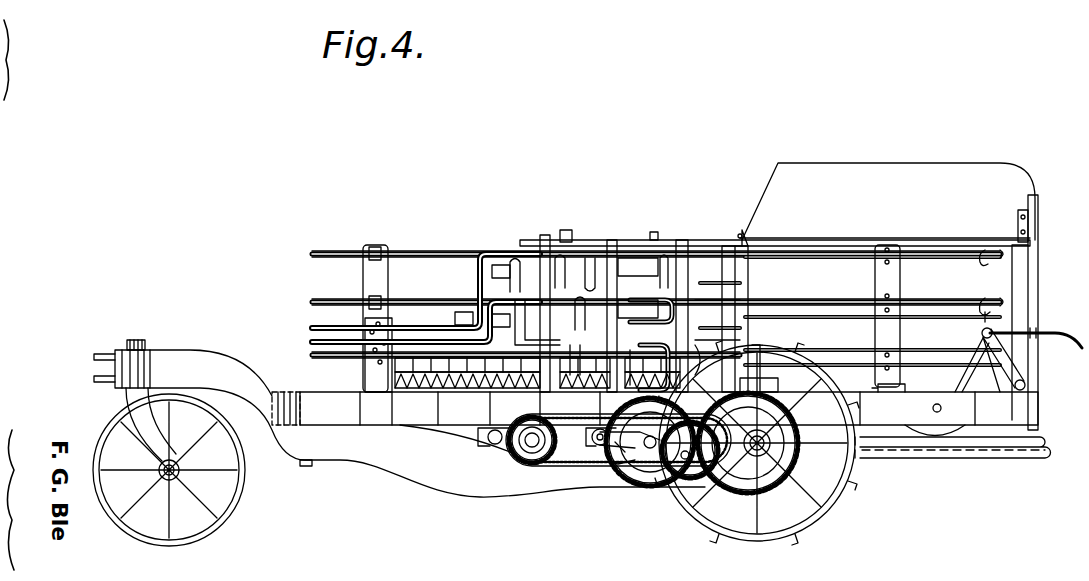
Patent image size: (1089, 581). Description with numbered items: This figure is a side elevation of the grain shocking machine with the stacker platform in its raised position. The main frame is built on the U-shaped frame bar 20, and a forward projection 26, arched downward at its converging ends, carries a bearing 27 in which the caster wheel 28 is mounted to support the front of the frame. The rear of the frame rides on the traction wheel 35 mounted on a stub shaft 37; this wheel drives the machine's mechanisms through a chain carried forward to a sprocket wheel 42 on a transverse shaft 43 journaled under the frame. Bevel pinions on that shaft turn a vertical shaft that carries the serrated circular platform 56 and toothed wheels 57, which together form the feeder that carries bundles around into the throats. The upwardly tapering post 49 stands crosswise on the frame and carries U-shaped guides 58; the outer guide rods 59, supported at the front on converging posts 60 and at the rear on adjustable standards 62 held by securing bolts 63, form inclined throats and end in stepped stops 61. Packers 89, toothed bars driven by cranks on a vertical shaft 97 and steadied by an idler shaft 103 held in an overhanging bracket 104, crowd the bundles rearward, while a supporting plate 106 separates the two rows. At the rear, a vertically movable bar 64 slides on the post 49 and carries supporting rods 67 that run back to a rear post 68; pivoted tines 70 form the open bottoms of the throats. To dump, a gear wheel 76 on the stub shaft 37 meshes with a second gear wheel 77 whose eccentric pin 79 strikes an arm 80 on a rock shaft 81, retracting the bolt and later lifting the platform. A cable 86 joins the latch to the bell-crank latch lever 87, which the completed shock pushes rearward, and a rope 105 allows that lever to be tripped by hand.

The frame bar 20 is at (292, 410).
The forward projection 26 is at (120, 362).
The bearing 27 is at (142, 346).
The caster wheel 28 is at (108, 506).
The traction wheel 35 is at (835, 496).
The stub shaft 37 is at (798, 457).
The sprocket wheel 42 is at (520, 462).
The shaft 43 is at (532, 440).
The upwardly tapering post 49 is at (736, 262).
The circular platform 56 is at (424, 388).
The toothed wheel 57 is at (435, 388).
The guide 58 is at (720, 296).
The outer guide rod 59 is at (312, 356).
The post 60 is at (362, 280).
The stop 61 is at (998, 250).
The standard 62 is at (892, 287).
The securing bolt 63 is at (896, 388).
The vertically movable bar 64 is at (754, 292).
The supporting rod 67 is at (945, 320).
The rear post 68 is at (1020, 278).
The tine 70 is at (993, 456).
The gear wheel 76 is at (772, 490).
The second gear wheel 77 is at (698, 472).
The pin 79 is at (668, 480).
The arm 80 is at (617, 460).
The rock shaft 81 is at (600, 430).
The cable 86 is at (978, 395).
The latch lever 87 is at (1024, 378).
The packer 89 is at (592, 320).
The vertical shaft 97 is at (676, 346).
The idler shaft 103 is at (576, 220).
The overhanging bracket 104 is at (627, 244).
The rope 105 is at (1062, 338).
The supporting plate 106 is at (892, 162).